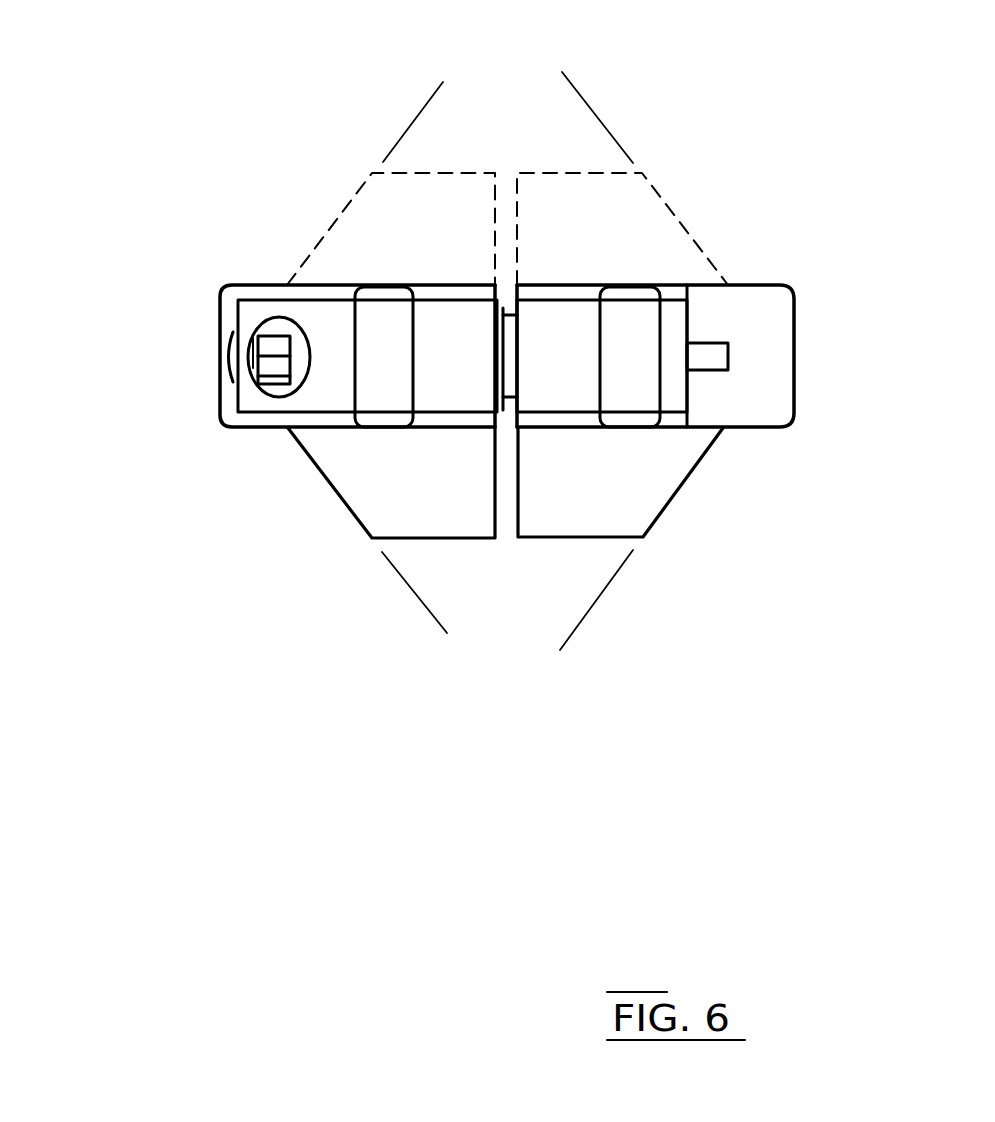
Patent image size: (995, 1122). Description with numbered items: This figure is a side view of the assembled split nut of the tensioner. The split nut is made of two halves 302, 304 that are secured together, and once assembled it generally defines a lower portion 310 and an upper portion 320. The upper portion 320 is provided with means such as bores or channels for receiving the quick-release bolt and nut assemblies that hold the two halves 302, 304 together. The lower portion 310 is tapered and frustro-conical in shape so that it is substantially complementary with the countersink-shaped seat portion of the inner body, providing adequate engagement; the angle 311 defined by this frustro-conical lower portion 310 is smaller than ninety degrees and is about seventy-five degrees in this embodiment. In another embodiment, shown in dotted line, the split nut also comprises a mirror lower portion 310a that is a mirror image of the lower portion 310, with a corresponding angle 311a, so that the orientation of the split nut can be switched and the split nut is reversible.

The half 302 is at (788, 428).
The half 304 is at (263, 421).
The lower portion 310 is at (192, 433).
The mirror lower portion 310a is at (195, 153).
The angle 311 is at (413, 660).
The angle 311a is at (402, 65).
The upper portion 320 is at (467, 397).